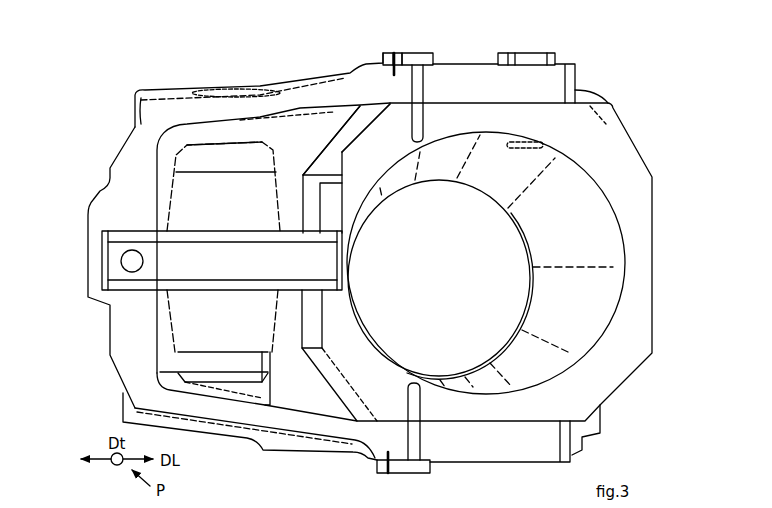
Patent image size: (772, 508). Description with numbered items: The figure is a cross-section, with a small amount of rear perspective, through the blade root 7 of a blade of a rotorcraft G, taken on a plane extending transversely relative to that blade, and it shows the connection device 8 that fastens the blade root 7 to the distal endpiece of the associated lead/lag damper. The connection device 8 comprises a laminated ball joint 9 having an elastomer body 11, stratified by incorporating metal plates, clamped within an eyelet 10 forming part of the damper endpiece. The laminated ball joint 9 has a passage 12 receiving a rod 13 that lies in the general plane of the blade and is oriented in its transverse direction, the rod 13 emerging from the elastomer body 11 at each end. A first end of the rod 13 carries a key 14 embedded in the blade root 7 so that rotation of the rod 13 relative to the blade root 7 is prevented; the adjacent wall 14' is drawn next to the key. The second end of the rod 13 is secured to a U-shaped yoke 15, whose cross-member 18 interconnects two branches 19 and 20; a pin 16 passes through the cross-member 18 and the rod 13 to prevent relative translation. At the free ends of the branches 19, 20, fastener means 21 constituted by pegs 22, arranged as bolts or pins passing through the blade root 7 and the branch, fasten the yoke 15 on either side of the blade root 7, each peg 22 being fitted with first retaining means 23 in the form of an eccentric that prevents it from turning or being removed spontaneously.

The blade root 7 is at (652, 260).
The connection device 8 is at (268, 64).
The laminated ball joint 9 is at (165, 188).
The eyelet 10 is at (226, 157).
The elastomer body 11 is at (224, 205).
The passage 12 is at (242, 300).
The rod 13 is at (220, 243).
The key 14 is at (310, 250).
The support wall 14' is at (343, 139).
The U-shaped yoke 15 is at (110, 182).
The pin 16 is at (132, 272).
The cross-member 18 is at (249, 390).
The branch 19 is at (473, 428).
The branch 20 is at (504, 78).
The fastener means 21 is at (396, 46).
The peg 22 is at (427, 82).
The first retaining means 23 is at (383, 57).
The rotorcraft G is at (634, 118).